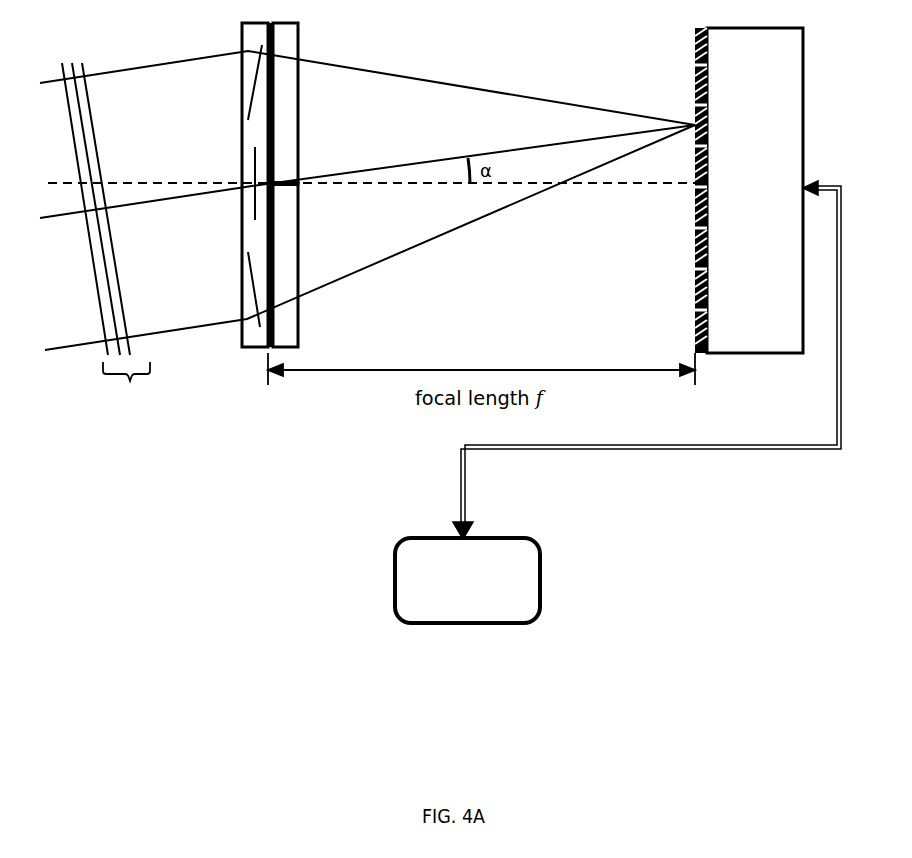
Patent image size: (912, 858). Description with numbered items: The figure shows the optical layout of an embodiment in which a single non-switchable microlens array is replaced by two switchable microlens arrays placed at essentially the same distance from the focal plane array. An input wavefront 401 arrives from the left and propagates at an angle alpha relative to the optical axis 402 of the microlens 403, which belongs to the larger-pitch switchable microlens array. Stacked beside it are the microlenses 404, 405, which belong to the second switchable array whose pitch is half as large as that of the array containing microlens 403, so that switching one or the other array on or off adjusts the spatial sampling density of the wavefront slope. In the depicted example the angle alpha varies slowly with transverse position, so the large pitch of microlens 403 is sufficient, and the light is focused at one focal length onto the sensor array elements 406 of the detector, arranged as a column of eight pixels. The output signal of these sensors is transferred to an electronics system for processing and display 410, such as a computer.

The input wavefront 401 is at (108, 244).
The optical axis 402 is at (178, 181).
The microlens 403 is at (240, 282).
The microlens 404 is at (302, 333).
The microlens 405 is at (302, 157).
The sensor array elements 406 is at (680, 57).
The electronics system for processing and display 410 is at (525, 575).